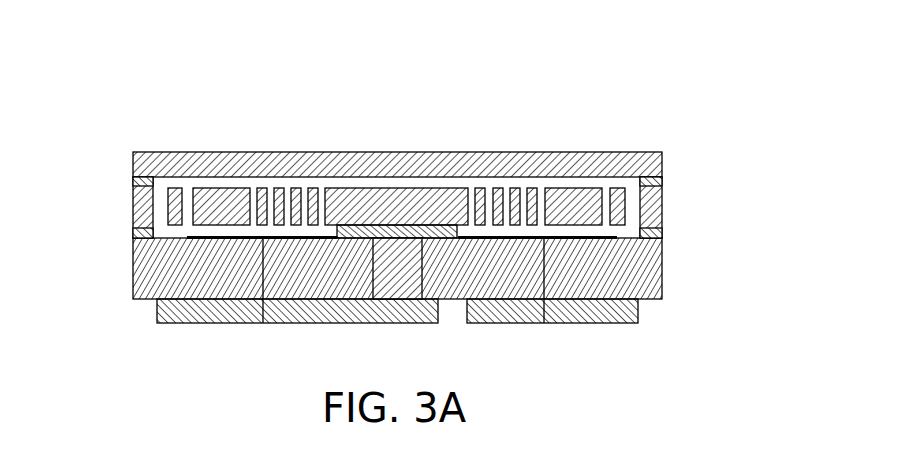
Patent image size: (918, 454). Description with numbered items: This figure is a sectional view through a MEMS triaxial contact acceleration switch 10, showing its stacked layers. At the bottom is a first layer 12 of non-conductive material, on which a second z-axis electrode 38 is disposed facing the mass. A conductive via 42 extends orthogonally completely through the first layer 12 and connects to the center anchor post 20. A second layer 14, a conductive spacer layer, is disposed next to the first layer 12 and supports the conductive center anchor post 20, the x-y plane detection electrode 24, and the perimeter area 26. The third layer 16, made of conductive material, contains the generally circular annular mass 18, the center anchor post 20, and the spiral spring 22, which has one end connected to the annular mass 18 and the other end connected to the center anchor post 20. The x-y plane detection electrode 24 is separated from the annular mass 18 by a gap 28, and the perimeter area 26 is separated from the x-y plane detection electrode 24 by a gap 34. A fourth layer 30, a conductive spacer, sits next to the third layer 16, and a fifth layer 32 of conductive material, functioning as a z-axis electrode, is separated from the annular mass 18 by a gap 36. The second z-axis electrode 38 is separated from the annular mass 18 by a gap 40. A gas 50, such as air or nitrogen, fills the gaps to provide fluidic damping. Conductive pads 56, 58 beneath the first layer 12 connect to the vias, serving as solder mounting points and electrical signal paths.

The MEMS triaxial contact acceleration switch 10 is at (708, 66).
The first layer 12 is at (662, 260).
The second layer 14 is at (133, 235).
The third layer 16 is at (133, 207).
The annular mass 18 is at (564, 188).
The center anchor post 20 is at (418, 188).
The spiral spring 22 is at (497, 188).
The x-y plane detection electrode 24 is at (175, 188).
The perimeter area 26 is at (133, 195).
The gap 28 is at (188, 190).
The fourth layer 30 is at (662, 182).
The fifth layer 32 is at (295, 152).
The gap 34 is at (628, 188).
The gap 36 is at (228, 186).
The second z-axis electrode 38 is at (544, 323).
The gap 40 is at (263, 323).
The conductive via 42 is at (387, 299).
The gas 50 is at (344, 188).
The conductive pad 56 is at (607, 323).
The conductive pad 58 is at (200, 323).